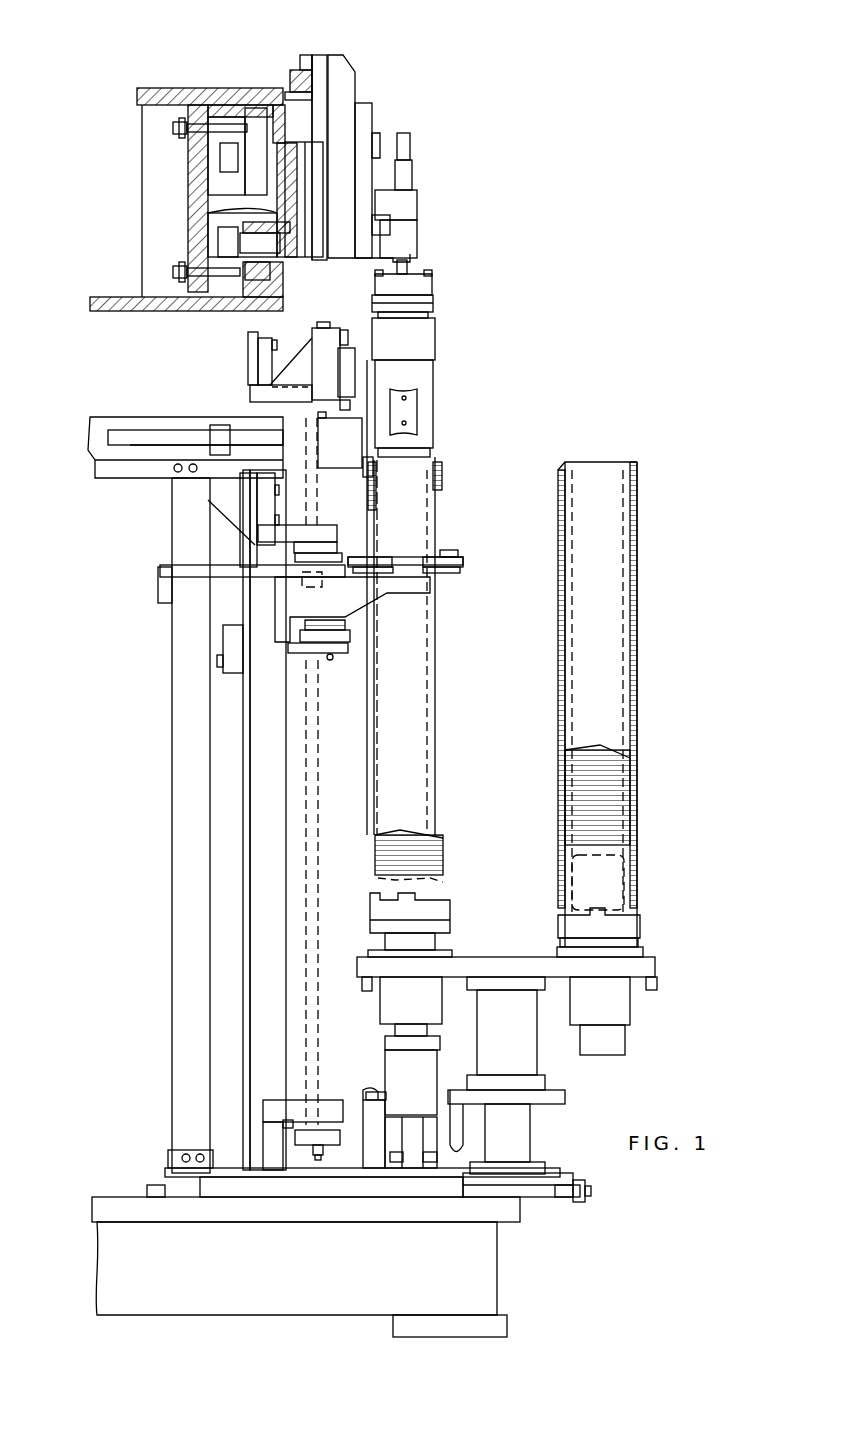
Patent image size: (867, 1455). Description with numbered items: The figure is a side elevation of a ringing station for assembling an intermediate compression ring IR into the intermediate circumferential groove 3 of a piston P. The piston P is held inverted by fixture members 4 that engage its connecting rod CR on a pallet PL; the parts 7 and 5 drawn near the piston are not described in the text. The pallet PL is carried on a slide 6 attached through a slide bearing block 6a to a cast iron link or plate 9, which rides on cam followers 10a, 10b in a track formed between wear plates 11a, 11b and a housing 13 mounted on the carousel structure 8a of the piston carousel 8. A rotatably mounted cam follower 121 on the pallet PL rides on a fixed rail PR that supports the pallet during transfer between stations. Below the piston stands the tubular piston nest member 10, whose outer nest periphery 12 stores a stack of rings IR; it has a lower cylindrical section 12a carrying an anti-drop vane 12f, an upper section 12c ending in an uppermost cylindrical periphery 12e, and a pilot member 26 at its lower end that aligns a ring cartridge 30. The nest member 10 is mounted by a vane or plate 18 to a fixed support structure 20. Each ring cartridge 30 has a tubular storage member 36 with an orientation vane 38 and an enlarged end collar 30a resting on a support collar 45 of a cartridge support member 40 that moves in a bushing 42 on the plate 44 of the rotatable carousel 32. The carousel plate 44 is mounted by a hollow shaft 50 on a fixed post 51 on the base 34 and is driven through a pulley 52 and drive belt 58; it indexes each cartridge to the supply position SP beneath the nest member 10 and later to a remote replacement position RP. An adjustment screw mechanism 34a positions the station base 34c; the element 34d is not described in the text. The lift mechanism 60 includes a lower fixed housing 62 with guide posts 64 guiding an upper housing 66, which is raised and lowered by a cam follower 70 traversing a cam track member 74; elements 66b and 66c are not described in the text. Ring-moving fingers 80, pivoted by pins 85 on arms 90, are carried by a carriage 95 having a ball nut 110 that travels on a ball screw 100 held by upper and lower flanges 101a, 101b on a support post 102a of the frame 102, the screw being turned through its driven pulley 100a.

The piston carousel 8 is at (80, 227).
The carousel structure 8a is at (522, 1330).
The cam follower 10b is at (250, 105).
The wear plate 11b is at (188, 162).
The cast iron link or plate 9 is at (208, 226).
The wear plate 11a is at (150, 300).
The housing 13 is at (255, 290).
The cam follower 10a is at (265, 315).
The fixed rail PR is at (320, 70).
The cam follower 121 is at (300, 57).
The pallet PL is at (340, 70).
The slide 6 is at (355, 78).
The slide bearing block 6a is at (372, 150).
The fixture members 4 is at (412, 143).
The connecting rod CR is at (402, 150).
The piston P is at (435, 290).
The flange 7 is at (432, 300).
The intermediate circumferential groove 3 is at (433, 300).
The washer 5 is at (428, 314).
The upper section 12c is at (440, 346).
The outer nest surface or periphery 12 is at (428, 368).
The piston nest member 10 is at (440, 392).
The lower cylindrical section 12a is at (417, 422).
The pilot member 26 is at (428, 452).
The uppermost cylindrical periphery 12e is at (375, 330).
The fixed support structure 20 is at (262, 366).
The upper flange 101a is at (275, 388).
The vane or plate 18 is at (372, 410).
The anti-drop vane 12f is at (375, 430).
The tubular storage member 36 is at (440, 480).
The compression ring IR is at (442, 488).
The ring cartridge 30 is at (445, 506).
The carriage 95 is at (335, 556).
The ring-moving finger 80 is at (392, 556).
The pin 85 is at (449, 556).
The arm 90 is at (465, 566).
The ball nut 110 is at (285, 592).
The frame 102 is at (172, 702).
The support post 102a is at (258, 843).
The ball screw 100 is at (310, 752).
The vane or plate 38 is at (366, 660).
The ring cartridge supply position SP is at (447, 745).
The remote position RP is at (645, 727).
The cartridge support member 40 is at (445, 880).
The end collar 30a is at (445, 912).
The support collar 45 is at (375, 936).
The carousel 32 is at (658, 970).
The carousel plate 44 is at (652, 978).
The bushing 42 is at (506, 1001).
The stem 66b is at (395, 1028).
The flange 66c is at (385, 1041).
The upper housing 66 is at (417, 1082).
The cam follower 70 is at (366, 1092).
The hollow shaft 50 is at (506, 1033).
The drive belt 58 is at (565, 1100).
The fixed upstanding post 51 is at (507, 1139).
The pulley 52 is at (540, 1105).
The lower flange 101b is at (275, 1127).
The driven pulley 100a is at (300, 1160).
The lift mechanism 60 is at (375, 1165).
The cam track member 74 is at (398, 1160).
The lower fixed housing 62 is at (397, 1160).
The guide posts 64 is at (420, 1150).
The base 34 is at (545, 1205).
The station base 34c is at (595, 1191).
The adjustment screw mechanism 34a is at (585, 1198).
The nut 34d is at (540, 1200).